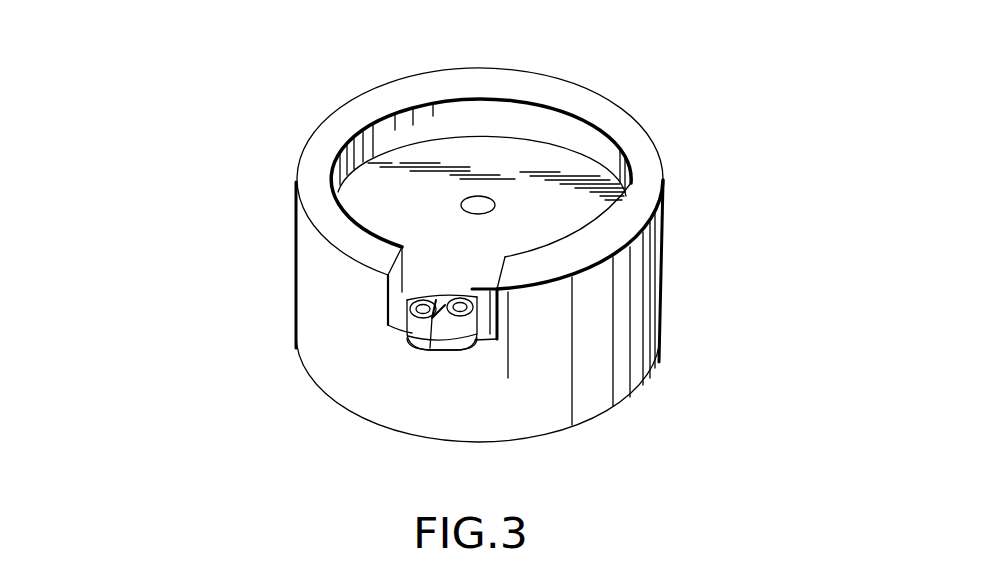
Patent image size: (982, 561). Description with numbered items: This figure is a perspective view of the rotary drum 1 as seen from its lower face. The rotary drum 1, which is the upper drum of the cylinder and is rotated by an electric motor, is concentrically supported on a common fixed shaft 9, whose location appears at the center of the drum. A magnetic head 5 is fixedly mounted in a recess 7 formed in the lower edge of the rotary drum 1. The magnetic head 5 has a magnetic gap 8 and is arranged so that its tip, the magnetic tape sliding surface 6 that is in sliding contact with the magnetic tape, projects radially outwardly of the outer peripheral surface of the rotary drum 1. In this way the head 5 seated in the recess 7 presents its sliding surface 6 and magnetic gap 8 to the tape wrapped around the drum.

The rotary drum 1 is at (643, 316).
The magnetic head 5 is at (466, 289).
The sliding surface 6 is at (447, 352).
The recess 7 is at (398, 306).
The magnetic gap 8 is at (416, 345).
The fixed shaft 9 is at (474, 203).